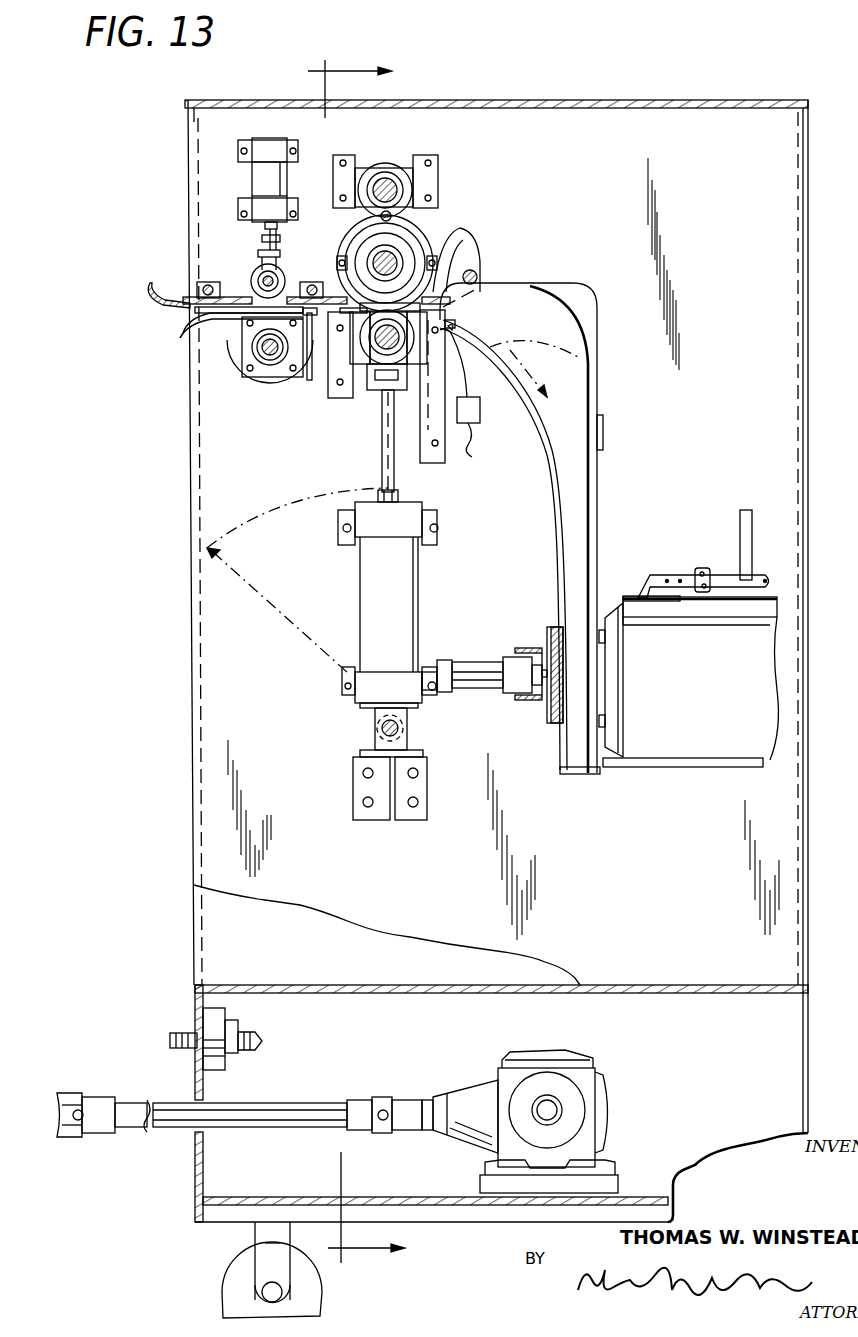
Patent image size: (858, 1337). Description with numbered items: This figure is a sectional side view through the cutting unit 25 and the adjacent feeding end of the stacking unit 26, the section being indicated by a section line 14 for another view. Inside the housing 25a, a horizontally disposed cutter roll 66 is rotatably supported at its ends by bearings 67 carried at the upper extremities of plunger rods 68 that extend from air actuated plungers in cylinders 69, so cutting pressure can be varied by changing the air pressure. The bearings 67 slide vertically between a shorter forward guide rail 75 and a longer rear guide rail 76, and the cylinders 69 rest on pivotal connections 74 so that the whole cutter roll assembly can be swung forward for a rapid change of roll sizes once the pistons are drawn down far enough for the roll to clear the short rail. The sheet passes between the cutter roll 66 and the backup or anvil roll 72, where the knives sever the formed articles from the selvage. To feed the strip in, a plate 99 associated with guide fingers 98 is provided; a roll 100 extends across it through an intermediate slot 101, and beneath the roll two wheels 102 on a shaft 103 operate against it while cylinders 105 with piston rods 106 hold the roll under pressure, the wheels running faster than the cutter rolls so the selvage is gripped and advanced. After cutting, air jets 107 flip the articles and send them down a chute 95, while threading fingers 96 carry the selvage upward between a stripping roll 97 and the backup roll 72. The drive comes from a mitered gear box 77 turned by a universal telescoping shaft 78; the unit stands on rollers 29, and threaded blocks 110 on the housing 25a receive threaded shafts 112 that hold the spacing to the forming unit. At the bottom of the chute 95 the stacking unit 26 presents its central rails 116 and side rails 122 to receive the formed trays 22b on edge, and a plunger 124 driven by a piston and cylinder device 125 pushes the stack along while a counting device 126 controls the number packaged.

The section line 14- 14 is at (370, 661).
The formed trays 22b is at (609, 607).
The cutting unit 25 is at (569, 98).
The housing of the cutting unit 25a is at (192, 998).
The stacking unit 26 is at (684, 560).
The rollers 29 is at (313, 1296).
The cutter roll 66 is at (360, 347).
The bearings 67 is at (418, 347).
The plunger rods 68 is at (385, 440).
The cylinders 69 is at (413, 598).
The backup or anvil roll 72 is at (402, 251).
The pivotal connections 74 is at (403, 729).
The forward guide rail 75 is at (333, 400).
The rear guide rail 76 is at (445, 455).
The mitered gear box 77 is at (588, 1070).
The universal telescoping shaft 78 is at (134, 1106).
The chute 95 is at (546, 424).
The threading fingers 96 is at (470, 258).
The stripping roll 97 is at (396, 172).
The guide fingers 98 is at (200, 328).
The plate 99 is at (168, 286).
The roll 100 is at (262, 277).
The intermediate slot 101 is at (316, 280).
The wheels 102 is at (262, 392).
The shaft 103 is at (263, 352).
The cylinders 105 is at (262, 173).
The piston rods 106 is at (277, 244).
The air jets 107 is at (471, 382).
The threaded blocks 110 is at (226, 1016).
The threaded shafts 112 is at (264, 1042).
The rails 116 is at (694, 757).
The side rails 122 is at (705, 627).
The plunger 124 is at (550, 627).
The piston and cylinder device 125 is at (480, 657).
The counting device 126 is at (660, 574).